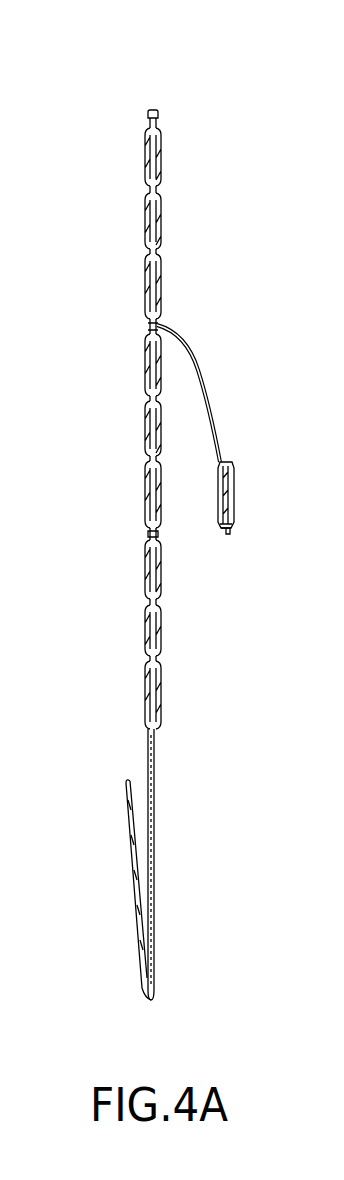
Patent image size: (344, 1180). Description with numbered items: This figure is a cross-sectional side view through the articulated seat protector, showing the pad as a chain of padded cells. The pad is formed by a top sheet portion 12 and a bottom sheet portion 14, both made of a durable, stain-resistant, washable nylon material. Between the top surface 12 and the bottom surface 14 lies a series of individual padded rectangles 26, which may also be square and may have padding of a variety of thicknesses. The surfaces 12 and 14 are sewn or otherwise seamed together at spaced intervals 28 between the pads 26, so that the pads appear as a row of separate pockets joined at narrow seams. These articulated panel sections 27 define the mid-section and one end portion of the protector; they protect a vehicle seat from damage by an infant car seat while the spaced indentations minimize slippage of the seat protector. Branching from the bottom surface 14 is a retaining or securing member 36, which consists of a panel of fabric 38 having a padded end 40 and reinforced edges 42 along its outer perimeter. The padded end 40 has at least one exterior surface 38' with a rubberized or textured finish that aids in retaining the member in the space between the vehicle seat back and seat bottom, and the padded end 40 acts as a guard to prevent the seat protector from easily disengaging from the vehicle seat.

The top sheet portion 12 is at (143, 556).
The bottom sheet portion 14 is at (162, 688).
The padded rectangles 26 is at (154, 575).
The articulated panel sections 27 is at (163, 211).
The spaced intervals 28 is at (163, 250).
The retaining member 36 is at (222, 445).
The panel of fabric 38 is at (279, 518).
The exterior surface 38' is at (280, 495).
The padded end 40 is at (233, 518).
The reinforced edges 42 is at (232, 536).